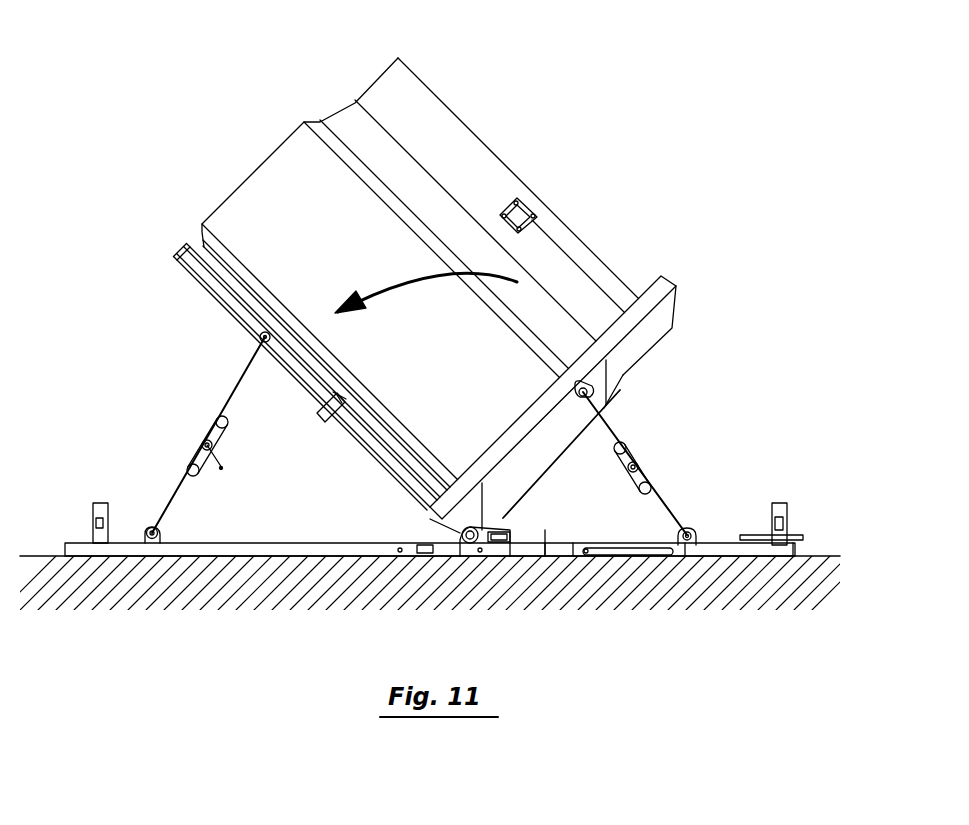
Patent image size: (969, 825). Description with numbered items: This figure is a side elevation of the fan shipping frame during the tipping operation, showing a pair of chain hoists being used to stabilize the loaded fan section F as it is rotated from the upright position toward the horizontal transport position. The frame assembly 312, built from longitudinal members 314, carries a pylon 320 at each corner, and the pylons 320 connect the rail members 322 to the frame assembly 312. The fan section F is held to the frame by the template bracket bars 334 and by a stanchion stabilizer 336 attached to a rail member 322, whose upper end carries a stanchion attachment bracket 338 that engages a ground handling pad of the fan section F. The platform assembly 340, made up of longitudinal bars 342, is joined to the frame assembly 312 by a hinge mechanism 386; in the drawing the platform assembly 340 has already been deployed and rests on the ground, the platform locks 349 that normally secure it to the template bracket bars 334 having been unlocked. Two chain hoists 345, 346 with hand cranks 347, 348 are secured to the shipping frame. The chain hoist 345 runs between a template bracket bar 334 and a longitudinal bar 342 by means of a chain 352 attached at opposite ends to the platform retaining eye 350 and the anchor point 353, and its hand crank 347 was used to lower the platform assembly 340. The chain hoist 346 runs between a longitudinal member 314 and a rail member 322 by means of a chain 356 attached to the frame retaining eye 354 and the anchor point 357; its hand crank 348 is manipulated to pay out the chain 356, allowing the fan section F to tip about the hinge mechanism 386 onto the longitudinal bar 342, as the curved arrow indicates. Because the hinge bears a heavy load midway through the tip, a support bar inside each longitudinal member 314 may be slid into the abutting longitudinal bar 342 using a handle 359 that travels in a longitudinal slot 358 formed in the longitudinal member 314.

The fan section F is at (260, 193).
The frame assembly 312 is at (755, 453).
The longitudinal member 314 is at (545, 543).
The pylon 320 is at (93, 510).
The rail member 322 is at (532, 407).
The template bracket bar 334 is at (202, 272).
The stanchion stabilizer 336 is at (563, 260).
The stanchion attachment bracket 338 is at (523, 207).
The platform assembly 340 is at (127, 527).
The longitudinal bar 342 is at (287, 543).
The chain hoist 345 is at (203, 442).
The chain hoist 346 is at (636, 465).
The hand crank 347 is at (221, 468).
The hand crank 348 is at (618, 490).
The platform lock 349 is at (317, 416).
The platform retaining eye 350 is at (160, 535).
The chain 352 is at (240, 388).
The anchor point 353 is at (260, 337).
The frame retaining eye 354 is at (688, 530).
The chain 356 is at (660, 497).
The anchor point 357 is at (590, 391).
The longitudinal slot 358 is at (635, 555).
The handle 359 is at (586, 556).
The hinge mechanism 386 is at (457, 532).